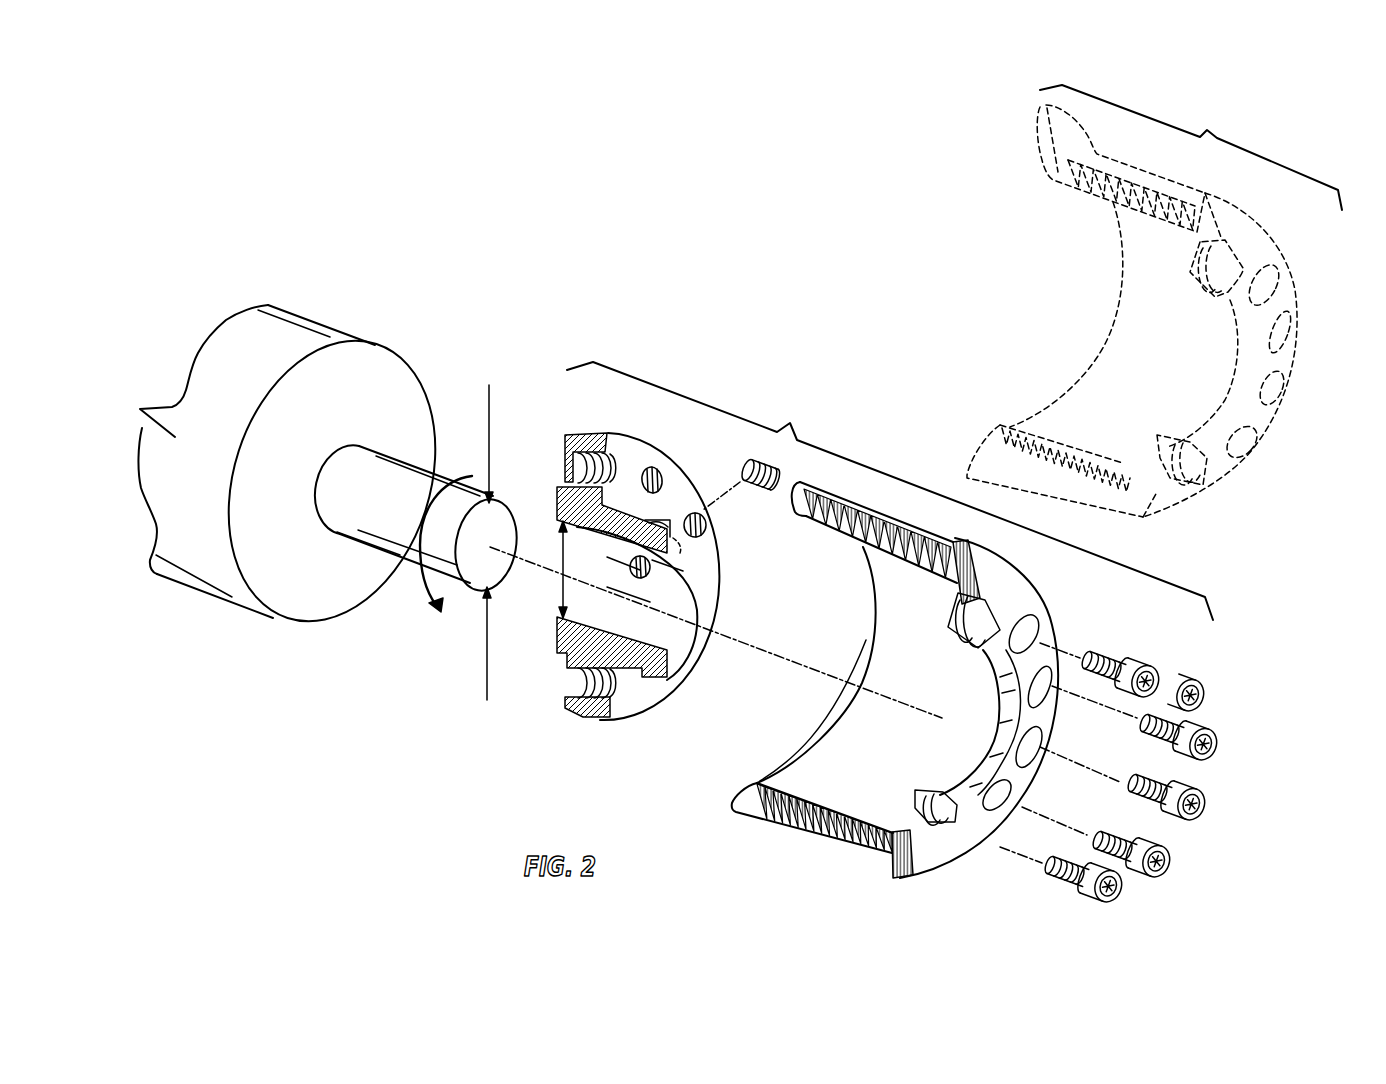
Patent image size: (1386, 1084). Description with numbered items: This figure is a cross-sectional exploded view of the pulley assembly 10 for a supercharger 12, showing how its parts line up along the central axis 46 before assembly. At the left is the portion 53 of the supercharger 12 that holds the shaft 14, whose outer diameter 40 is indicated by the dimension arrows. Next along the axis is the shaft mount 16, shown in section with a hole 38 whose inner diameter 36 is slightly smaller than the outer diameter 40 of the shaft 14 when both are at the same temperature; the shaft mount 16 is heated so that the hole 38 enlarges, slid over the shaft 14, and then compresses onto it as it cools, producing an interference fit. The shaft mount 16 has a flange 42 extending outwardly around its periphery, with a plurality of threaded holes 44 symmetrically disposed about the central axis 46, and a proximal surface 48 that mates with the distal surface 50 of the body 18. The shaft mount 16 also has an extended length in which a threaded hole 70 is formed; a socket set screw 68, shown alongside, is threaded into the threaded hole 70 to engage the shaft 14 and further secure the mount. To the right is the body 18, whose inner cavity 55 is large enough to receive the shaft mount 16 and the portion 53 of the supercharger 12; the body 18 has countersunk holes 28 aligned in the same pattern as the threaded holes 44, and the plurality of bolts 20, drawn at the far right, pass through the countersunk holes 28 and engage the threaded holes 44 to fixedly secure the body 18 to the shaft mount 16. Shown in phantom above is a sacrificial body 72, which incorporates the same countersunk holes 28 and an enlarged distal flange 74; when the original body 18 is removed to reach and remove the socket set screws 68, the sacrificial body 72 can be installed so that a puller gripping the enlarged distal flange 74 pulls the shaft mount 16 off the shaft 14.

The pulley assembly 10 is at (890, 491).
The supercharger 12 is at (241, 642).
The shaft 14 is at (395, 530).
The shaft mount 16 is at (621, 572).
The body 18 is at (865, 694).
The bolts 20 is at (1062, 902).
The countersunk holes 28 is at (980, 610).
The inner diameter 36 is at (562, 588).
The hole 38 is at (672, 630).
The outer diameter 40 is at (487, 455).
The flange 42 is at (568, 436).
The threaded holes 44 is at (638, 500).
The central axis 46 is at (795, 658).
The proximal surface 48 is at (677, 493).
The distal surface 50 is at (917, 798).
The portion 53 is at (212, 552).
The inner cavity 55 is at (800, 730).
The socket set screws 68 is at (742, 468).
The threaded hole 70 is at (638, 572).
The sacrificial body 72 is at (1282, 418).
The enlarged distal flange 74 is at (1191, 147).